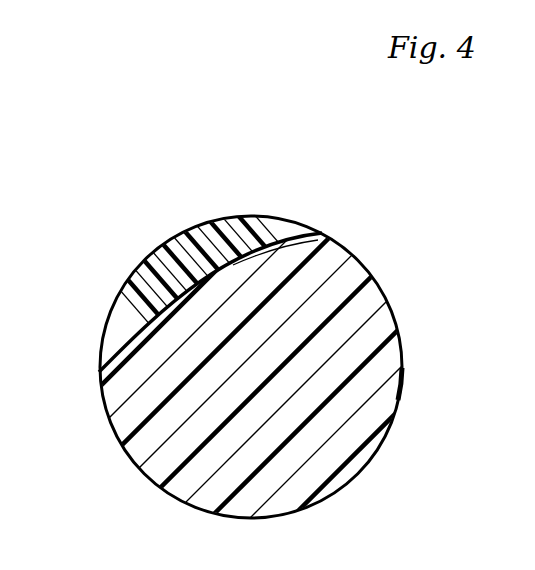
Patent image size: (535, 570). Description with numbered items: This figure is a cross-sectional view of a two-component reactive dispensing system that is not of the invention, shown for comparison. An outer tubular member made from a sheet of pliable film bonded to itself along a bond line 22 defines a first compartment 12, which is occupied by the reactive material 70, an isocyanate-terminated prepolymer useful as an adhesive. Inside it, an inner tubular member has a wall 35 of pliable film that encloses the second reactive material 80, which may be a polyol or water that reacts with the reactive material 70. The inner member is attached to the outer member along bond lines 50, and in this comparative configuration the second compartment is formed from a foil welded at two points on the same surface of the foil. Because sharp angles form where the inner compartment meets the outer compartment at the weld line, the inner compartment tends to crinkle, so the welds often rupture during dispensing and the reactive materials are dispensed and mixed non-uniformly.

The first compartment 12 is at (308, 282).
The bond line 22 is at (403, 395).
The wall 35 is at (183, 284).
The bond line 50 is at (313, 233).
The reactive material 70 is at (342, 322).
The reactive material 80 is at (138, 297).